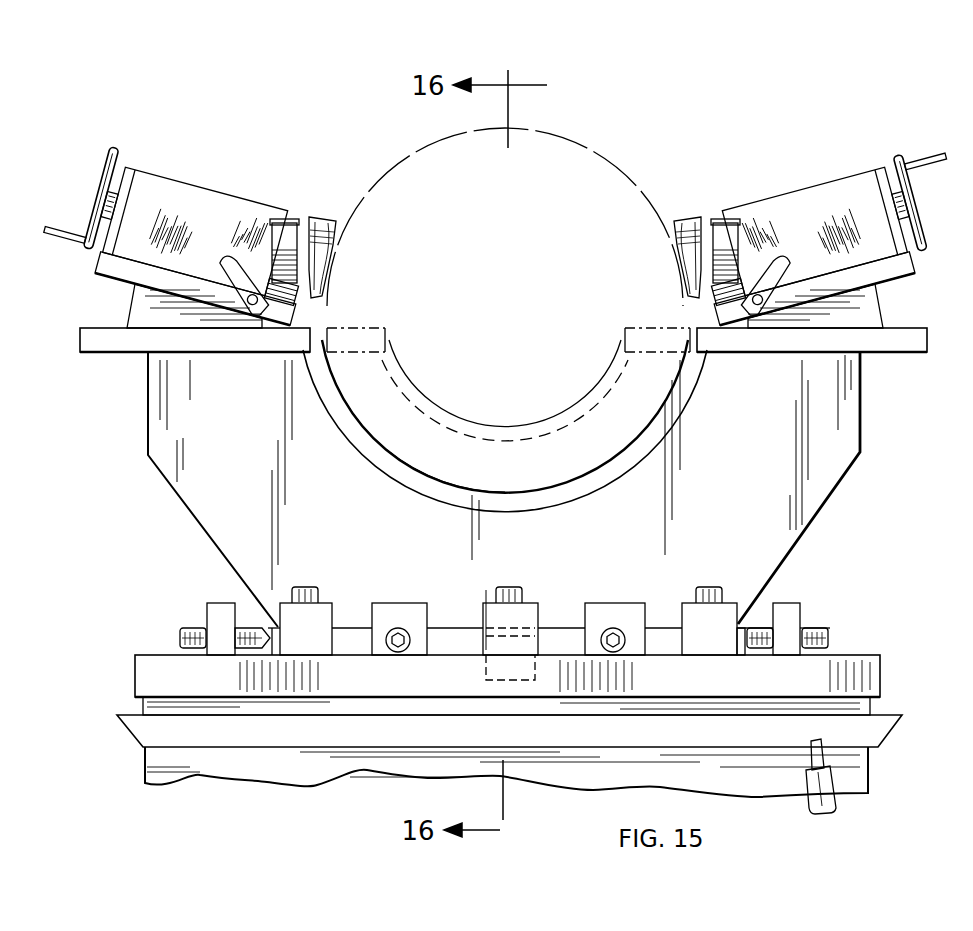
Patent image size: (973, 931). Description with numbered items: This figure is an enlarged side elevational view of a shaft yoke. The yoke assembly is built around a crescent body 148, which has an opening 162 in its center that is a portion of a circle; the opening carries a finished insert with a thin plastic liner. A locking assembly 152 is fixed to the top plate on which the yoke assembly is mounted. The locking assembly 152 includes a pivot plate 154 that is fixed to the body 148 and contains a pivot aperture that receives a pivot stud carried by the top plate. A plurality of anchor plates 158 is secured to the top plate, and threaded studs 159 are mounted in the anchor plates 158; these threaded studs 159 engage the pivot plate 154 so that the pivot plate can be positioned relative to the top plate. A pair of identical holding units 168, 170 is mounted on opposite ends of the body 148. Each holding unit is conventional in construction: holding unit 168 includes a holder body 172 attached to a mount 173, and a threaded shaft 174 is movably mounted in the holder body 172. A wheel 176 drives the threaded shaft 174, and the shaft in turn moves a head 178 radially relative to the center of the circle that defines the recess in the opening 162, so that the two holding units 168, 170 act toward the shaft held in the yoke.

The crescent body 148 is at (835, 425).
The locking assembly 152 is at (792, 600).
The pivot plate 154 is at (660, 627).
The anchor plates 158 is at (214, 606).
The threaded studs 159 is at (184, 630).
The opening 162 is at (441, 478).
The holding unit 168 is at (200, 192).
The holding unit 170 is at (790, 192).
The holder body 172 is at (157, 180).
The mount 173 is at (152, 310).
The threaded shaft 174 is at (300, 222).
The wheel 176 is at (110, 160).
The head 178 is at (318, 310).